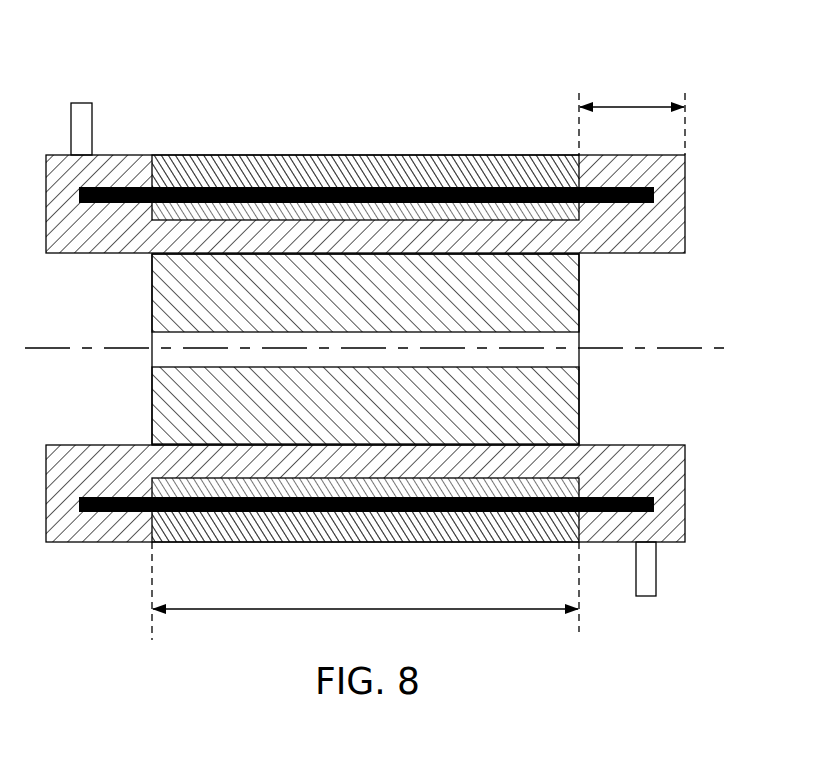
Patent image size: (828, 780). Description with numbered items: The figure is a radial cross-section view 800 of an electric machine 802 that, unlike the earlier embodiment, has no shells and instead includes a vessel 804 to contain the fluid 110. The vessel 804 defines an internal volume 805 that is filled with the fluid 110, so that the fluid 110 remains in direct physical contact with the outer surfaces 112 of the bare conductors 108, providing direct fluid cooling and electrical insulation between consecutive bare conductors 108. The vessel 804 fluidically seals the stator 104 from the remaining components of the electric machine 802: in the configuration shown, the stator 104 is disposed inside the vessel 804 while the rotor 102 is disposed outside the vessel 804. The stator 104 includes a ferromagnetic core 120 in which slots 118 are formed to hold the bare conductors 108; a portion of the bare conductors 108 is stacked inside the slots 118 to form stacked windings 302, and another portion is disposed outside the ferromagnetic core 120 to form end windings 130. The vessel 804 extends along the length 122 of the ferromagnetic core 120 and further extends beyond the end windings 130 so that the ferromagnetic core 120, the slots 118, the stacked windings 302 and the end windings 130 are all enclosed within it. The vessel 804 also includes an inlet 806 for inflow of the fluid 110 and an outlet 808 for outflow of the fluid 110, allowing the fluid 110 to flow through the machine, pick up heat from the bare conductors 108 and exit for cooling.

The radial cross-section view 800 is at (183, 60).
The electric machine 802 is at (670, 180).
The vessel 804 is at (644, 238).
The internal volume 805 is at (257, 247).
The inlet 806 is at (92, 111).
The outlet 808 is at (657, 581).
The rotor 102 is at (162, 410).
The stator 104 is at (600, 185).
The bare conductors 108 is at (241, 184).
The fluid 110 is at (111, 237).
The outer surfaces 112 is at (182, 184).
The slots 118 is at (377, 185).
The ferromagnetic core 120 is at (452, 168).
The length of the ferromagnetic core 122 is at (368, 610).
The end windings 130 is at (620, 188).
The stacked windings 302 is at (300, 185).